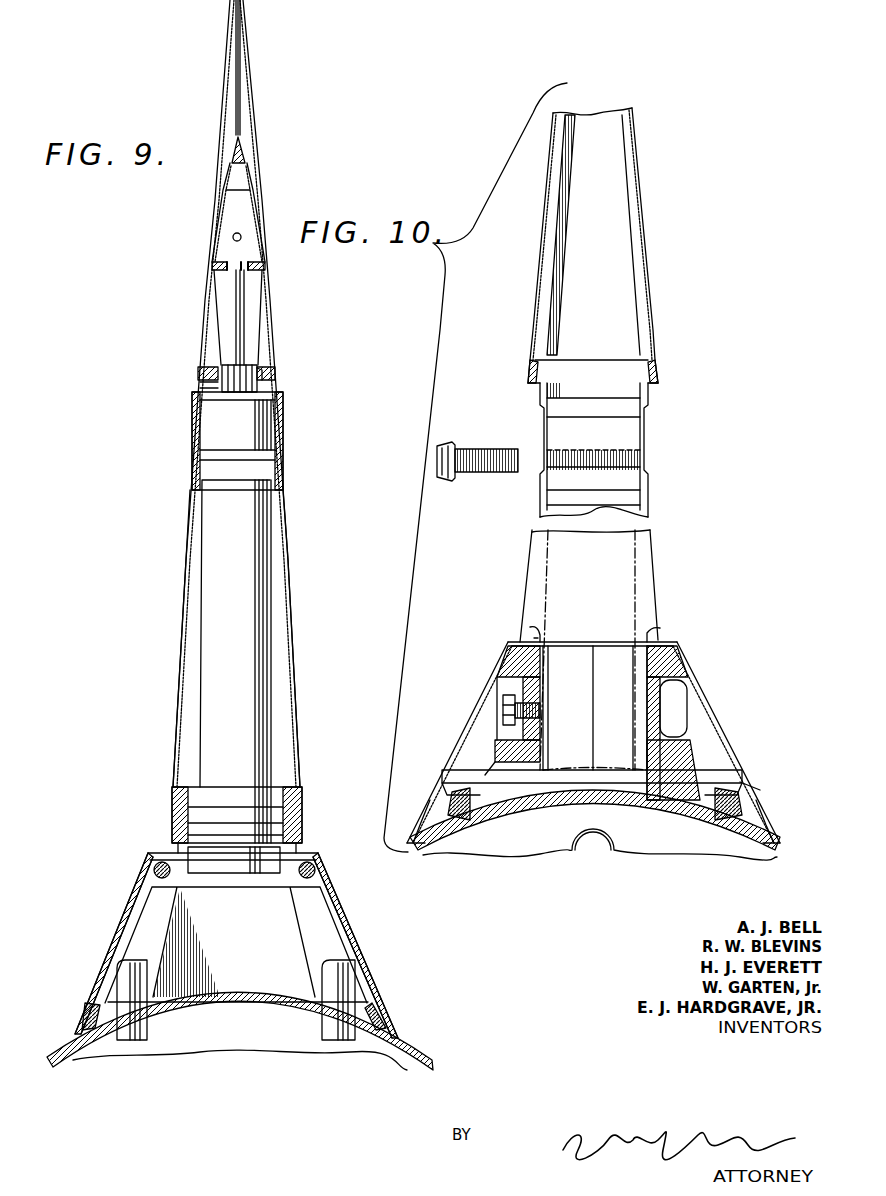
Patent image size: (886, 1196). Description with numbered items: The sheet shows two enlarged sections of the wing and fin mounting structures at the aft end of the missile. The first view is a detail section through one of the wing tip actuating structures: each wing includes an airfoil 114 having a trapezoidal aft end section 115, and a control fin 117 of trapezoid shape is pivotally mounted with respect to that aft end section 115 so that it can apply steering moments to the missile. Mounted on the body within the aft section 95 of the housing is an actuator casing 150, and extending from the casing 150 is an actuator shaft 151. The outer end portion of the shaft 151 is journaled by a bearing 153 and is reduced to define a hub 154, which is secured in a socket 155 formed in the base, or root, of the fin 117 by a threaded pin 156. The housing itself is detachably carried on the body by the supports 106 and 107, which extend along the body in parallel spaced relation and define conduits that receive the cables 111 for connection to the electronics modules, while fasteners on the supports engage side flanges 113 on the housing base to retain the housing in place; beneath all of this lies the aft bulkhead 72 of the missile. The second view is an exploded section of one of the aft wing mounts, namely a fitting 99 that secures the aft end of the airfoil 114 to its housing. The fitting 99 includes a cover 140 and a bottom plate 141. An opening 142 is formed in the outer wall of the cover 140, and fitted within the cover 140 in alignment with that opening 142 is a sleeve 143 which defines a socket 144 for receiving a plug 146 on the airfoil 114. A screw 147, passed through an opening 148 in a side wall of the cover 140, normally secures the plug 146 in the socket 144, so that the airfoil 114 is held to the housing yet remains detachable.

In FIG. 10, the aft bulkhead 72 is at (560, 833).
In FIG. 9, the aft section of the housing 95 is at (160, 860).
In FIG. 10, the aft fitting 99 is at (708, 698).
In FIG. 9, the support 106 is at (90, 997).
In FIG. 10, the support 106 is at (433, 803).
In FIG. 9, the support 107 is at (385, 997).
In FIG. 10, the support 107 is at (750, 800).
In FIG. 9, the cable 111 is at (85, 1022).
In FIG. 10, the cable 111 is at (745, 810).
In FIG. 10, the side flange 113 is at (740, 782).
In FIG. 9, the airfoil 114 is at (177, 540).
In FIG. 10, the airfoil 114 is at (652, 213).
In FIG. 9, the trapezoidal aft end section 115 is at (185, 630).
In FIG. 9, the control fin 117 is at (207, 283).
In FIG. 10, the cover 140 is at (713, 723).
In FIG. 10, the bottom plate 141 is at (697, 777).
In FIG. 10, the opening 142 is at (648, 634).
In FIG. 10, the sleeve 143 is at (663, 657).
In FIG. 10, the socket 144 is at (530, 628).
In FIG. 10, the plug 146 is at (648, 432).
In FIG. 10, the screw 147 is at (458, 446).
In FIG. 10, the opening 148 is at (480, 735).
In FIG. 9, the actuator casing 150 is at (153, 910).
In FIG. 9, the actuator shaft 151 is at (215, 685).
In FIG. 9, the bearing 153 is at (210, 423).
In FIG. 9, the hub 154 is at (260, 368).
In FIG. 9, the socket 155 is at (222, 365).
In FIG. 9, the threaded pin 156 is at (205, 382).